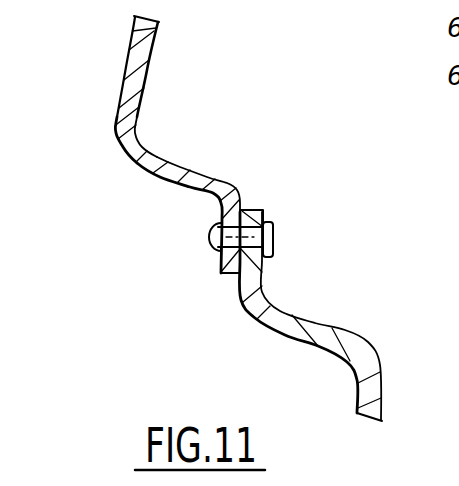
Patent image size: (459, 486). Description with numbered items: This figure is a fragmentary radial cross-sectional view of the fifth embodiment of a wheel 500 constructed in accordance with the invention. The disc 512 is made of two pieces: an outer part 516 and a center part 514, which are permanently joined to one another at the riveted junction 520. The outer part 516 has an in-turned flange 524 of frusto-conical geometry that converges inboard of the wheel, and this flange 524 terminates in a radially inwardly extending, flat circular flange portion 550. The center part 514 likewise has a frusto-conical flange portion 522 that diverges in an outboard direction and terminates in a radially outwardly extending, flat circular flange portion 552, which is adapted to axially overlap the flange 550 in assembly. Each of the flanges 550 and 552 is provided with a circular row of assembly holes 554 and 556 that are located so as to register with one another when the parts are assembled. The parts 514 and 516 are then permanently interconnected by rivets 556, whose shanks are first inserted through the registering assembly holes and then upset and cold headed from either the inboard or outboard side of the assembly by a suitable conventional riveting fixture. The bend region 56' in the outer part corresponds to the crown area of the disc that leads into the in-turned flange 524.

The wheel 500 is at (274, 136).
The disc 512 is at (124, 39).
The center part 514 is at (358, 388).
The outer part 516 is at (112, 111).
The bend portion 56' is at (85, 141).
The fastener assembly 520 is at (231, 231).
The frusto-conical flange portion 522 is at (333, 332).
The in-turned flange 524 is at (170, 172).
The flat circular flange portion 550 is at (230, 274).
The flat circular flange portion 552 is at (258, 208).
The assembly holes 554 is at (234, 212).
The rivets 556 is at (208, 240).